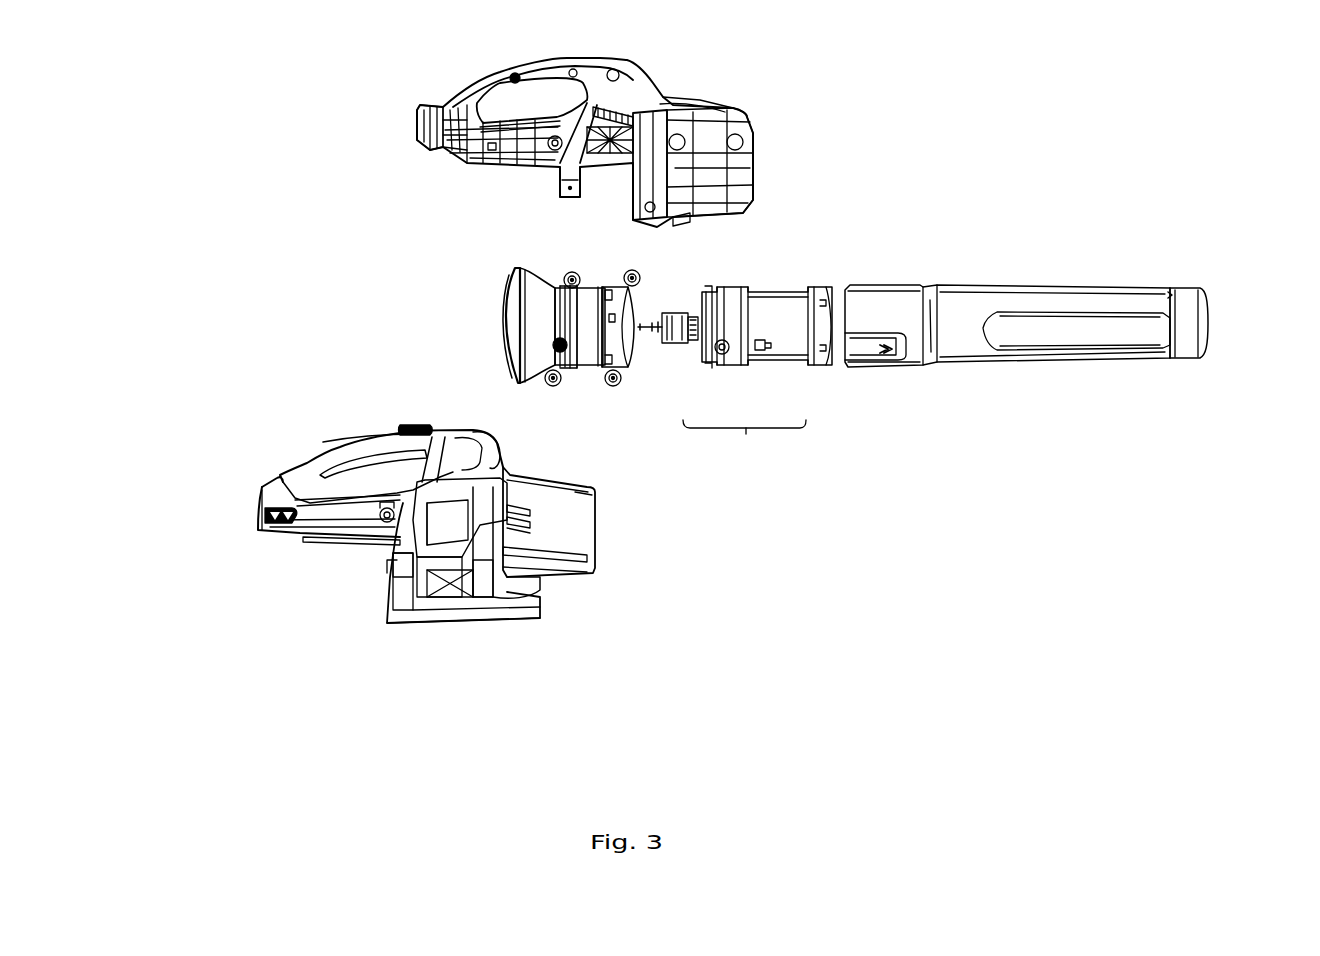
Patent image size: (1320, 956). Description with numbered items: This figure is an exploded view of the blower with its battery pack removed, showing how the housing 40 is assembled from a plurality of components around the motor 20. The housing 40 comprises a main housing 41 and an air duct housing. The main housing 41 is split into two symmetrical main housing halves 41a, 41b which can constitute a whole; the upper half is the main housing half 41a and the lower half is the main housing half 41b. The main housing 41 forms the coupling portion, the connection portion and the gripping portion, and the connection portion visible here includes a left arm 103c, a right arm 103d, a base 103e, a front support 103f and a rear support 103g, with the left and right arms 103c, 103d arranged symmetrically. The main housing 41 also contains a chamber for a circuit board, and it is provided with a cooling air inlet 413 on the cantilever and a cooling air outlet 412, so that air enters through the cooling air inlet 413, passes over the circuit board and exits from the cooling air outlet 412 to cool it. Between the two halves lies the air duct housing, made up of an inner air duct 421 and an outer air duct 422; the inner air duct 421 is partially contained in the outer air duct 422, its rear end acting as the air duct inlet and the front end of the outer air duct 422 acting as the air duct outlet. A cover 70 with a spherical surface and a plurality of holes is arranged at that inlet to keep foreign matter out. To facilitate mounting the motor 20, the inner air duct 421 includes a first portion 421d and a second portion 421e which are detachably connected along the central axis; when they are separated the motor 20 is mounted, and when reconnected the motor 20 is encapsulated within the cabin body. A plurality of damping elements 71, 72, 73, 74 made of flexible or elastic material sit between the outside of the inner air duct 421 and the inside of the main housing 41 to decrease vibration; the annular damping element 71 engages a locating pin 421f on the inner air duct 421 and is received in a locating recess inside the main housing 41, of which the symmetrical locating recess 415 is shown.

The housing 40 is at (869, 119).
The main housing 41 is at (585, 142).
The main housing half 41a is at (418, 116).
The main housing half 41b is at (259, 483).
The cooling air outlet 412 is at (652, 98).
The cooling air inlet 413 is at (432, 450).
The locating recess 415 is at (710, 122).
The motor 20 is at (676, 332).
The cover 70 is at (500, 298).
The damping element 71 is at (551, 386).
The damping element 72 is at (612, 386).
The damping element 73 is at (575, 272).
The damping element 74 is at (634, 270).
The inner air duct 421 is at (744, 437).
The first portion 421d is at (626, 360).
The second portion 421e is at (757, 365).
The locating pin 421f is at (555, 338).
The outer air duct 422 is at (992, 362).
The left arm 103c is at (608, 150).
The right arm 103d is at (438, 565).
The base 103e is at (470, 612).
The front support 103f is at (498, 592).
The rear support 103g is at (396, 558).